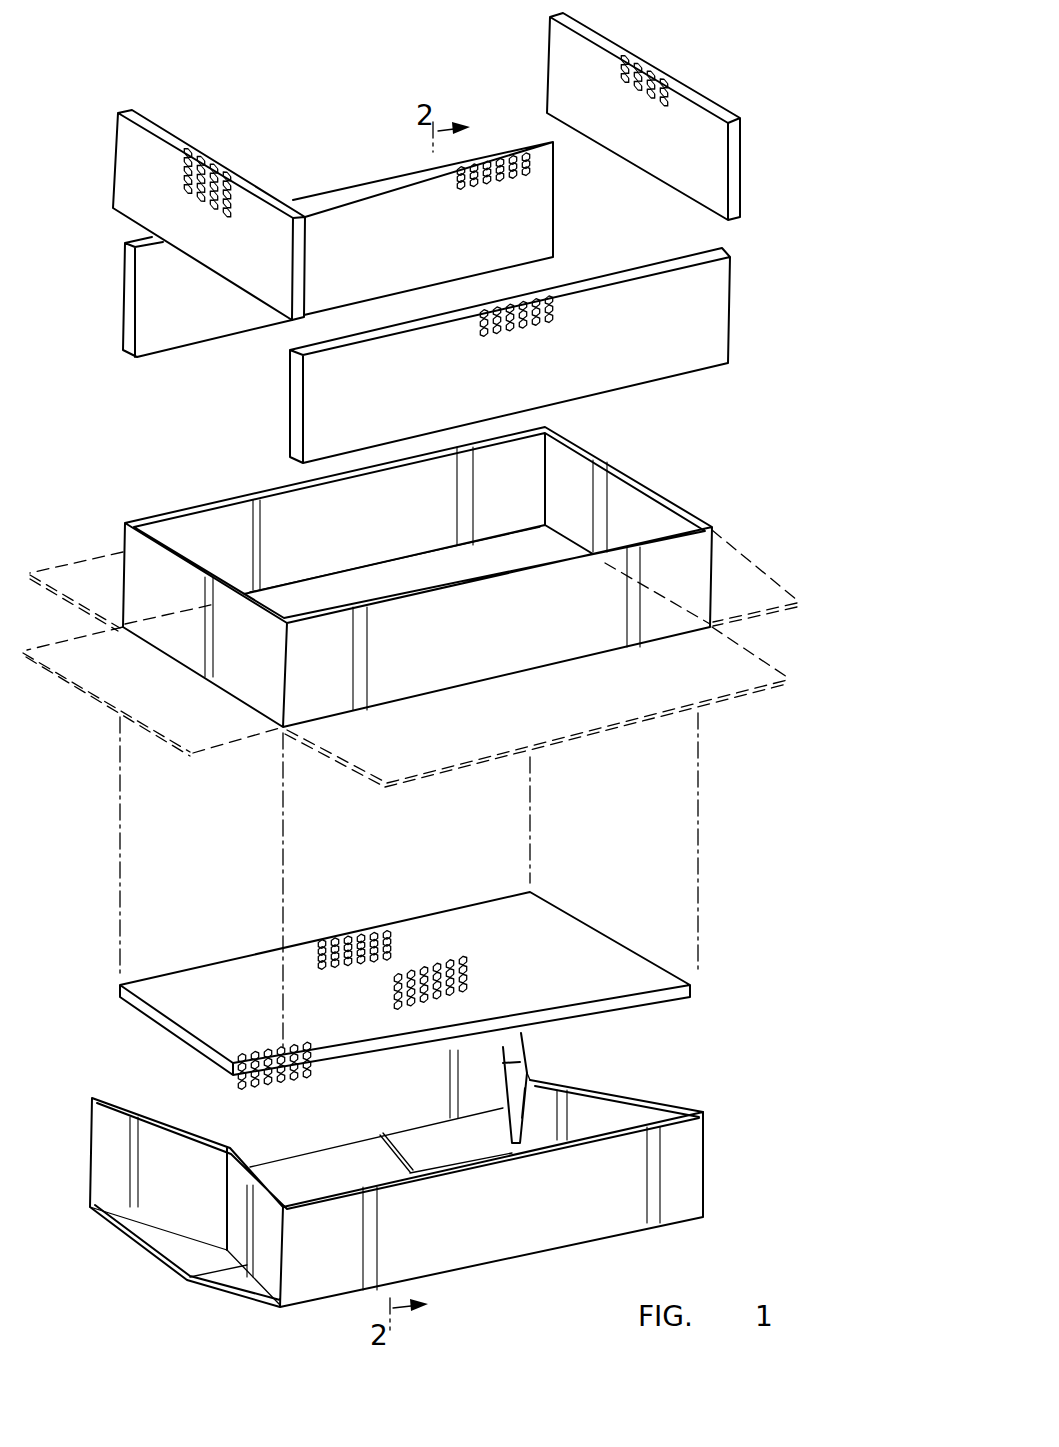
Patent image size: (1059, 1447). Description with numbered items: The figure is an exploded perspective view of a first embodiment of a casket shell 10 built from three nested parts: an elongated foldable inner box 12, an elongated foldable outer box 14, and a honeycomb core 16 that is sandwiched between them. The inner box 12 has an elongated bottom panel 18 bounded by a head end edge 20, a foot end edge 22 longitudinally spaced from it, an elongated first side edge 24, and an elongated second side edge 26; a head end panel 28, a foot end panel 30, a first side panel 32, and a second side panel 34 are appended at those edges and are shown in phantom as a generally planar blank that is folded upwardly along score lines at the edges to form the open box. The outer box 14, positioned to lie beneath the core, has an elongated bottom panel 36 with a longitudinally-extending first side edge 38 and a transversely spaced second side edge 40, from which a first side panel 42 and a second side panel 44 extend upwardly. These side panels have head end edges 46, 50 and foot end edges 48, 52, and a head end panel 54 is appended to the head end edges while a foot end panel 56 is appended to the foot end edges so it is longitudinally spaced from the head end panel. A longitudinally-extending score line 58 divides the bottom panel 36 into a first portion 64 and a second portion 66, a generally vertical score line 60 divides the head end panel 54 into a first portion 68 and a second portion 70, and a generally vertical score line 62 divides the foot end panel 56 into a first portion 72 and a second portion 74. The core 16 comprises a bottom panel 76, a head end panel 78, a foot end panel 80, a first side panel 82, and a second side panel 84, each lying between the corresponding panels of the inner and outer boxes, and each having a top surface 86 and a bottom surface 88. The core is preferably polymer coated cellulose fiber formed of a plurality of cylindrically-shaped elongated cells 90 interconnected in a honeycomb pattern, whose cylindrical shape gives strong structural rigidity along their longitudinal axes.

The casket shell 10 is at (862, 174).
The inner box 12 is at (441, 607).
The outer box 14 is at (445, 1183).
The core 16 is at (790, 269).
The bottom panel 18 is at (430, 572).
The head end edge 20 is at (197, 668).
The foot end edge 22 is at (553, 527).
The first side edge 24 is at (287, 583).
The second side edge 26 is at (408, 693).
The head end panel 28 is at (220, 633).
The foot end panel 30 is at (633, 503).
The first side panel 32 is at (77, 580).
The second side panel 34 is at (475, 605).
The bottom panel 36 is at (190, 1281).
The first side edge 38 is at (307, 1150).
The second side edge 40 is at (430, 1278).
The first side panel 42 is at (305, 1095).
The second side panel 44 is at (437, 1208).
The head end edge 46 is at (90, 1138).
The foot end edge 48 is at (523, 1060).
The head end edge 50 is at (286, 1258).
The foot end edge 52 is at (710, 1165).
The head end panel 54 is at (233, 1142).
The foot end panel 56 is at (538, 1074).
The score line 58 is at (218, 1293).
The score line 60 is at (232, 1200).
The score line 62 is at (520, 1120).
The first portion 64 is at (202, 1253).
The second portion 66 is at (245, 1266).
The first portion 68 is at (170, 1145).
The second portion 70 is at (242, 1183).
The first portion 72 is at (513, 1088).
The second portion 74 is at (575, 1110).
The bottom panel 76 is at (618, 972).
The head end panel 78 is at (152, 134).
The foot end panel 80 is at (590, 37).
The first side panel 82 is at (342, 189).
The second side panel 84 is at (637, 273).
The top surface 86 is at (688, 131).
The bottom surface 88 is at (752, 162).
The cells 90 is at (553, 313).